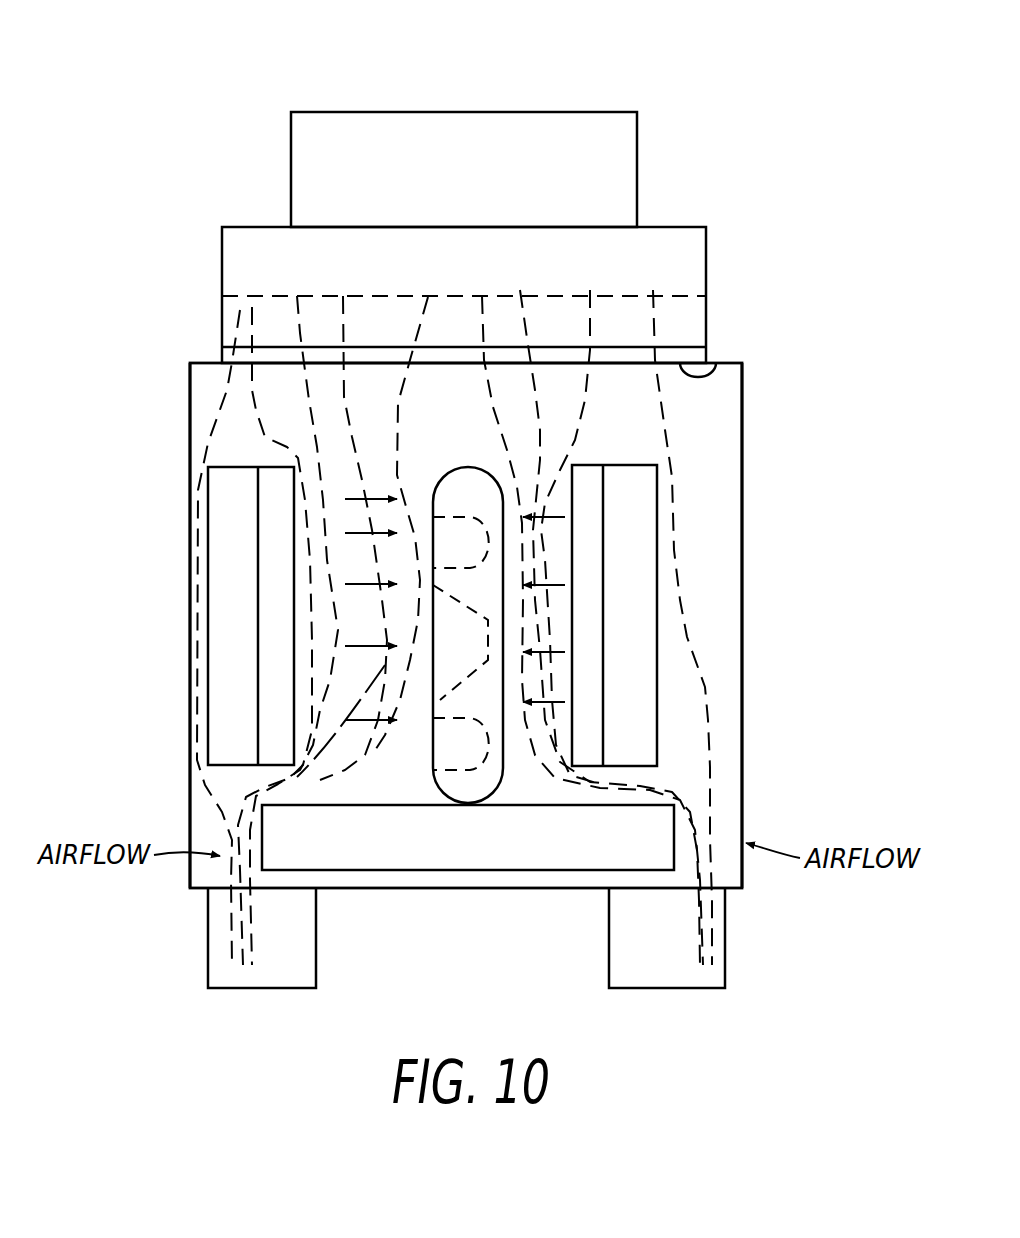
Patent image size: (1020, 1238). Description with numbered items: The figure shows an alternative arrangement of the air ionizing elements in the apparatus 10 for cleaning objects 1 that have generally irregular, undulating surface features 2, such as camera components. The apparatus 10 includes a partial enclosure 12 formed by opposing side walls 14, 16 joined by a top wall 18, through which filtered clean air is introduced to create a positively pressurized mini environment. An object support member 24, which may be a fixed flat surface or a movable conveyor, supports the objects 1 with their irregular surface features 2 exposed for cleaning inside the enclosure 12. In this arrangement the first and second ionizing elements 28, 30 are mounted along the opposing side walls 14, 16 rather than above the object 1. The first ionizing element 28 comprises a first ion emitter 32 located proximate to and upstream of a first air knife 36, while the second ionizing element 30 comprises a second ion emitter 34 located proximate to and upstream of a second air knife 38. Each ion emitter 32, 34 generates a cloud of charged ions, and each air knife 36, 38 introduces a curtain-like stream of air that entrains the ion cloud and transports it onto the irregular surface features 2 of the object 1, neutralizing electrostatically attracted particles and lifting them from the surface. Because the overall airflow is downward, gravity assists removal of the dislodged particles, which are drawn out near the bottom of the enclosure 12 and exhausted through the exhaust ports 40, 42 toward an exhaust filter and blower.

The apparatus 10 is at (252, 120).
The partial enclosure 12 is at (770, 388).
The side wall 14 is at (743, 505).
The side wall 16 is at (190, 460).
The top wall 18 is at (717, 363).
The object 1 is at (456, 783).
The irregular, undulating surface features 2 is at (451, 514).
The object support member 24 is at (512, 853).
The first ionizing element 28 is at (258, 638).
The second ionizing element 30 is at (605, 670).
The first ion emitter 32 is at (220, 565).
The second ion emitter 34 is at (657, 733).
The first air knife 36 is at (296, 497).
The second air knife 38 is at (592, 470).
The exhaust port 40 is at (258, 988).
The exhaust port 42 is at (675, 988).